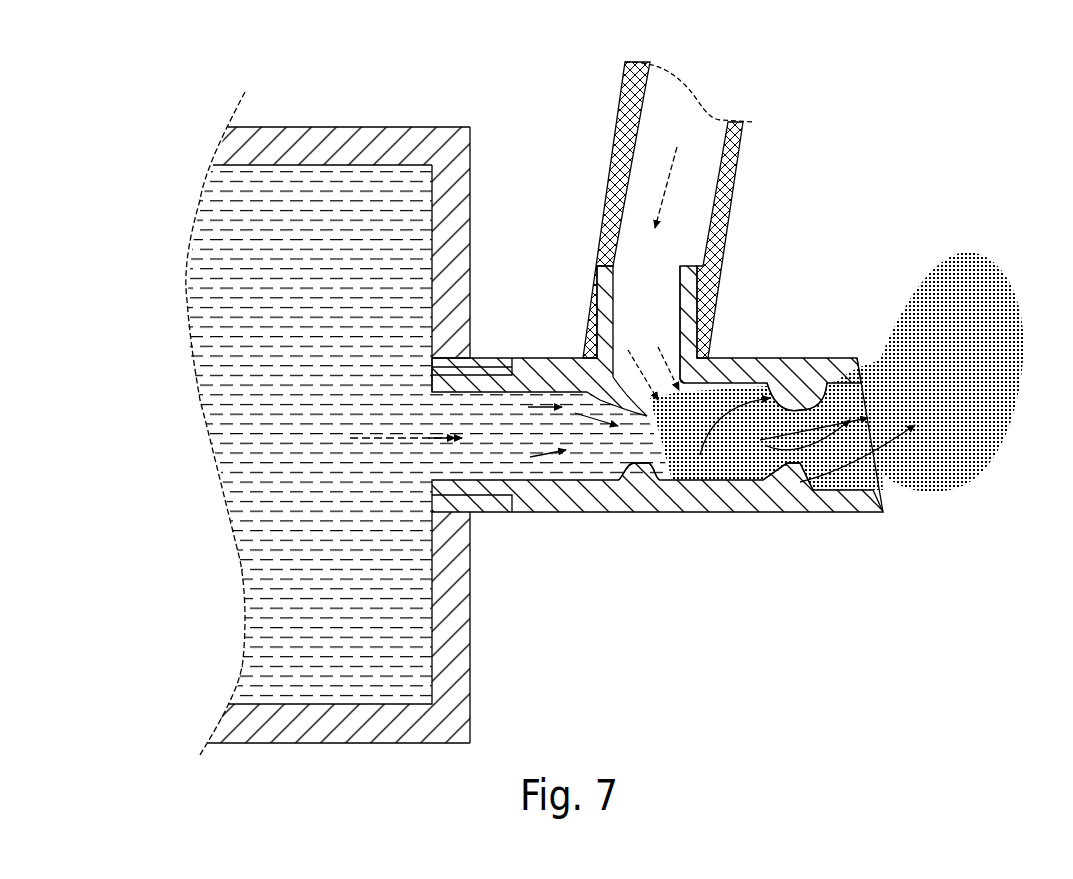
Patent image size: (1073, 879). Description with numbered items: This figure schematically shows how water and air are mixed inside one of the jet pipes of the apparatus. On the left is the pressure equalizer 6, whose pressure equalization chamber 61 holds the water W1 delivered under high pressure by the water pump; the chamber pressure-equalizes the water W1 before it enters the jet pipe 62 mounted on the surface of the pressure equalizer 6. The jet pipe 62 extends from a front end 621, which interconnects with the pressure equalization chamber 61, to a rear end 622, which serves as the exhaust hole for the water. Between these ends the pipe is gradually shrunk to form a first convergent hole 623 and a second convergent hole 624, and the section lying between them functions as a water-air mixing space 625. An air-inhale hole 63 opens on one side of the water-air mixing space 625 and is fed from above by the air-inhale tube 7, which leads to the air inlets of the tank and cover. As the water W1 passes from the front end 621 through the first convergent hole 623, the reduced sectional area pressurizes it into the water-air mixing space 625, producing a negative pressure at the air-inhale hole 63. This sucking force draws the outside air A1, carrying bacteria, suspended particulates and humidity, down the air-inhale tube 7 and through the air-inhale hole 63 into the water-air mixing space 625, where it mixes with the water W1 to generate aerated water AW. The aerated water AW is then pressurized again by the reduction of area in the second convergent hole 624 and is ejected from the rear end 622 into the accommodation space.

The pressure equalizer 6 is at (401, 393).
The pressure equalization chamber 61 is at (470, 230).
The jet pipe 62 is at (657, 427).
The front end 621 is at (528, 478).
The rear end 622 is at (776, 338).
The first convergent hole 623 is at (642, 470).
The second convergent hole 624 is at (796, 470).
The water-air mixing space 625 is at (723, 387).
The air-inhale hole 63 is at (668, 327).
The air-inhale tube 7 is at (717, 223).
The air A1 is at (662, 257).
The water W1 is at (320, 428).
The aerated water AW is at (883, 490).